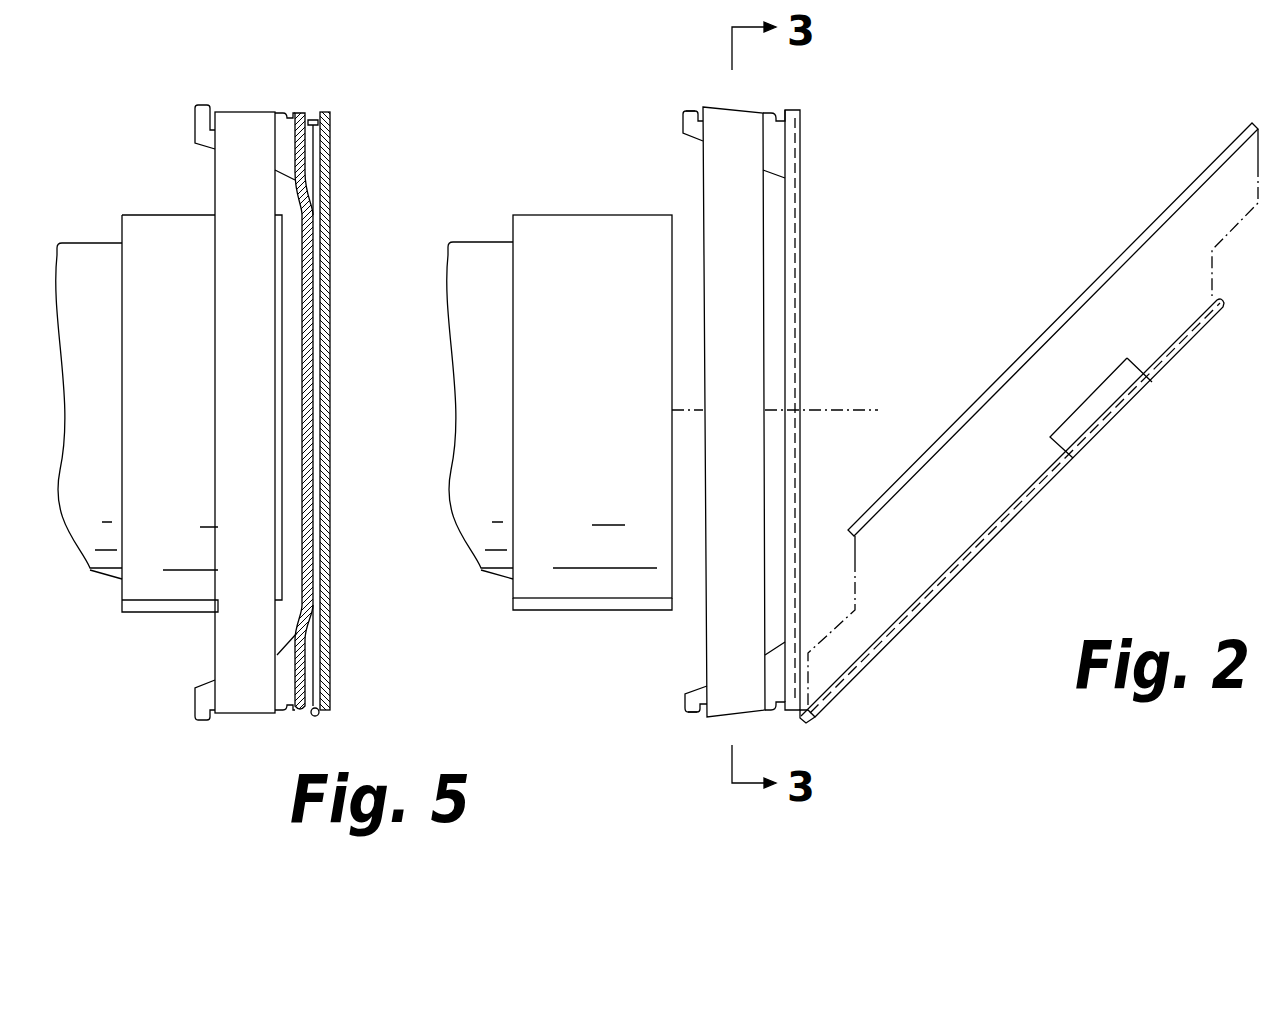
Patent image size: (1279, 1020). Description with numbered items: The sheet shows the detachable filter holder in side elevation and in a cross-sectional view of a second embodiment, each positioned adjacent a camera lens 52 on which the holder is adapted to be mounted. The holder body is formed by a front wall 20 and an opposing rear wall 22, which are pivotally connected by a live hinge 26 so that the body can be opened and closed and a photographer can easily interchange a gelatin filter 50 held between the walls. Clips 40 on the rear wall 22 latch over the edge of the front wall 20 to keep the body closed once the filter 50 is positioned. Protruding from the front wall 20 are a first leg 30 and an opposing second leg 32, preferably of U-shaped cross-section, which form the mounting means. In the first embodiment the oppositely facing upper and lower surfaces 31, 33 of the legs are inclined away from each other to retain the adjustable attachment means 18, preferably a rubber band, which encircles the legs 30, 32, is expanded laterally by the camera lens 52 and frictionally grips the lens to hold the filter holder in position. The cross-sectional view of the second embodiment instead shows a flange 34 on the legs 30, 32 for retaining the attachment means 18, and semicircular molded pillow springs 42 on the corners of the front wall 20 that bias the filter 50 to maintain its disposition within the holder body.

In FIG. 2, the adjustable attachment means 18 is at (751, 304).
In FIG. 2, the front wall 20 is at (801, 191).
In FIG. 2, the rear wall 22 is at (1202, 332).
In FIG. 2, the live hinge 26 is at (803, 714).
In FIG. 2, the first leg 30 is at (690, 126).
In FIG. 2, the upper surface 31 is at (700, 108).
In FIG. 2, the second leg 32 is at (690, 697).
In FIG. 2, the lower surface 33 is at (697, 713).
In FIG. 5, the flange 34 is at (196, 118).
In FIG. 2, the clip 40 is at (1097, 412).
In FIG. 5, the pillow spring 42 is at (303, 618).
In FIG. 5, the filter 50 is at (330, 112).
In FIG. 2, the filter 50 is at (1131, 243).
In FIG. 5, the camera lens 52 is at (188, 372).
In FIG. 2, the camera lens 52 is at (609, 372).